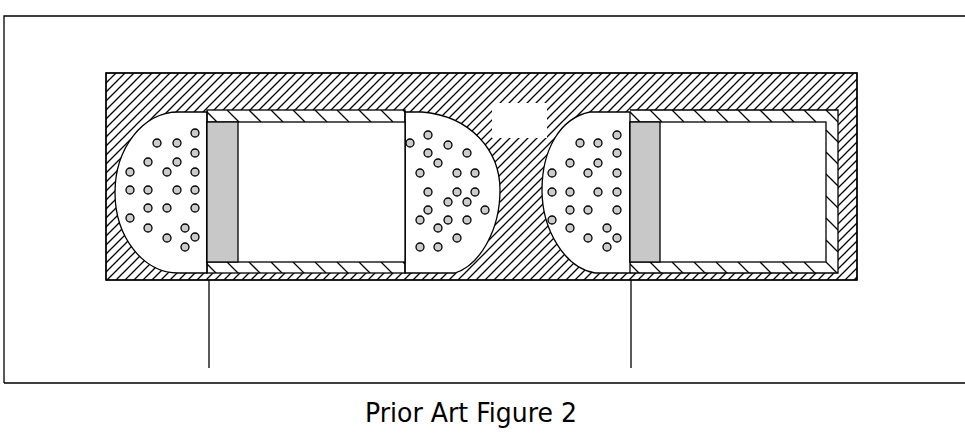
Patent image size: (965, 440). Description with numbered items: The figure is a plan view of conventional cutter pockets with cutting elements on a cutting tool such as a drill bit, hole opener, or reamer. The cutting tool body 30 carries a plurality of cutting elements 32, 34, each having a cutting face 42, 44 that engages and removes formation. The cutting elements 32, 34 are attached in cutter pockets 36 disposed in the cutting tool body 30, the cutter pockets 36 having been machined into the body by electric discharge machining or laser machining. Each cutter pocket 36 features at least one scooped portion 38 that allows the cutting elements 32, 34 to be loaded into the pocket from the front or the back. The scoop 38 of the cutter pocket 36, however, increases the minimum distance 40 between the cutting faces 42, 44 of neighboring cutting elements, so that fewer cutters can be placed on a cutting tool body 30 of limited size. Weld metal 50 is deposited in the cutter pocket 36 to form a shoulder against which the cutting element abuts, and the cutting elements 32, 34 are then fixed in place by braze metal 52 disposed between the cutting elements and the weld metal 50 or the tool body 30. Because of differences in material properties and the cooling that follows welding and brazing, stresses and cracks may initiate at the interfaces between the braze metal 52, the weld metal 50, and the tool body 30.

The cutting tool body 30 is at (506, 134).
The cutting element 32 is at (308, 203).
The cutting element 34 is at (728, 203).
The cutter pocket 36 is at (126, 127).
The scooped portion 38 is at (462, 130).
The minimum distance 40 is at (631, 357).
The cutting face 42 is at (208, 138).
The cutting face 44 is at (630, 138).
The weld metal 50 is at (172, 252).
The braze metal 52 is at (287, 110).